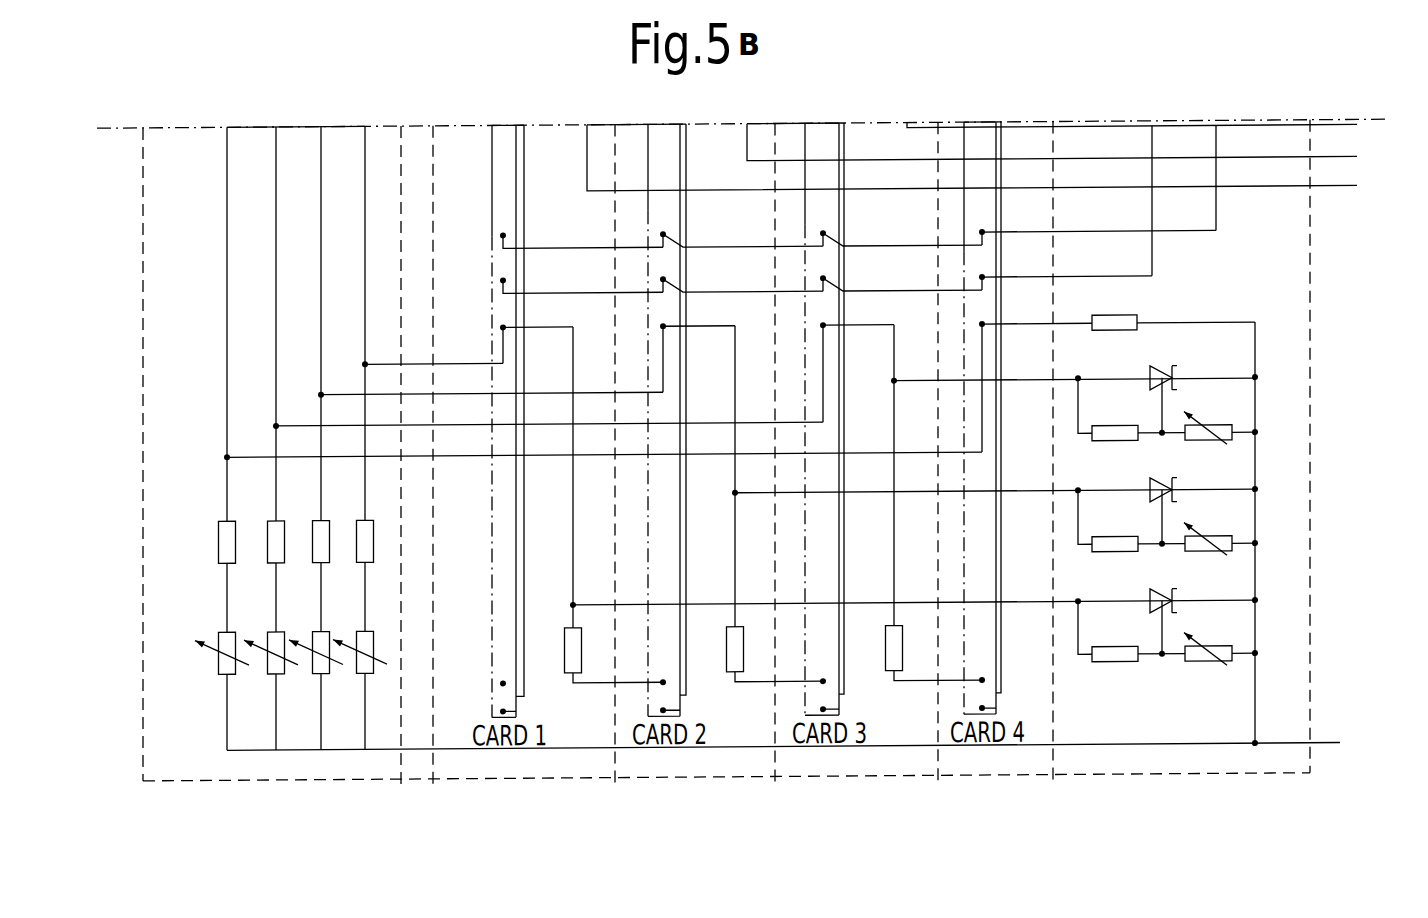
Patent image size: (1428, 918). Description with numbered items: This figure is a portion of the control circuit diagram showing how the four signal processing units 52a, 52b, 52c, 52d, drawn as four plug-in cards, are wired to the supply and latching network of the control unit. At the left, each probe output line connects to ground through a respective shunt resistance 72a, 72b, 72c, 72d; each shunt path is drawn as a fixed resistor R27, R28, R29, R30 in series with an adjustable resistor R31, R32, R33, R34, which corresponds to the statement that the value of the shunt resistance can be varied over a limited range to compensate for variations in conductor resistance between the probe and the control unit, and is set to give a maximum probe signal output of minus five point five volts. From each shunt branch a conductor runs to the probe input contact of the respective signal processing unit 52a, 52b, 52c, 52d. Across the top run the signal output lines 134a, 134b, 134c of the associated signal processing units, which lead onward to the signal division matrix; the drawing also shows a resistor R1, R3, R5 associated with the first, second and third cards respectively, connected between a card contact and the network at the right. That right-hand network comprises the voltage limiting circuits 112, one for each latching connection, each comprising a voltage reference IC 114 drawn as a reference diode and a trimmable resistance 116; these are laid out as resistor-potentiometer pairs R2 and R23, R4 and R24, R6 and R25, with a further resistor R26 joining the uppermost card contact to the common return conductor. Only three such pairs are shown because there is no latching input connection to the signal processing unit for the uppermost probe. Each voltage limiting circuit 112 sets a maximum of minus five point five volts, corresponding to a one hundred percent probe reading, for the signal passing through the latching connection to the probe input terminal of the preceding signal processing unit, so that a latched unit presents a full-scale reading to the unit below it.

The signal output line 134a is at (1328, 195).
The signal output line 134b is at (1328, 166).
The signal output line 134c is at (1328, 134).
The shunt resistance 72a is at (558, 471).
The shunt resistance 72b is at (523, 471).
The shunt resistance 72c is at (474, 472).
The shunt resistance 72d is at (418, 472).
The signal processing unit 52a is at (492, 672).
The signal processing unit 52b is at (688, 690).
The signal processing unit 52c is at (846, 690).
The signal processing unit 52d is at (1003, 690).
The voltage limiting circuit 112 is at (1157, 675).
The voltage reference IC 114 is at (1150, 486).
The trimmable resistance 116 is at (1216, 669).
The resistor R1 is at (600, 504).
The resistor R3 is at (760, 503).
The resistor R5 is at (919, 502).
The resistor R2 is at (1115, 639).
The resistor R4 is at (1115, 530).
The resistor R6 is at (1115, 419).
The variable resistor R23 is at (1213, 640).
The variable resistor R24 is at (1213, 531).
The variable resistor R25 is at (1213, 420).
The resistor R26 is at (1173, 305).
The resistor R27 is at (239, 513).
The resistor R28 is at (287, 513).
The resistor R29 is at (332, 512).
The resistor R30 is at (375, 512).
The variable resistor R31 is at (226, 626).
The variable resistor R32 is at (274, 626).
The variable resistor R33 is at (319, 625).
The variable resistor R34 is at (363, 625).